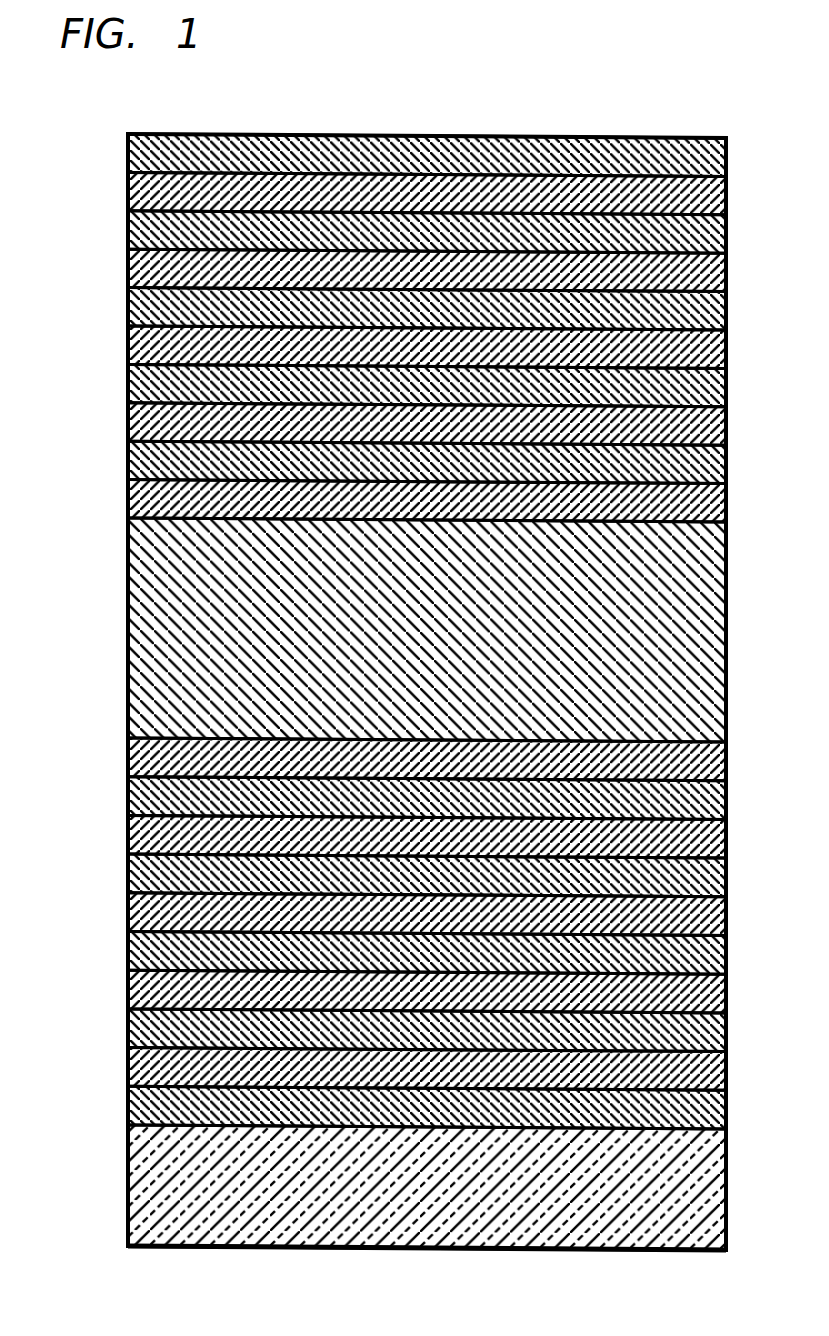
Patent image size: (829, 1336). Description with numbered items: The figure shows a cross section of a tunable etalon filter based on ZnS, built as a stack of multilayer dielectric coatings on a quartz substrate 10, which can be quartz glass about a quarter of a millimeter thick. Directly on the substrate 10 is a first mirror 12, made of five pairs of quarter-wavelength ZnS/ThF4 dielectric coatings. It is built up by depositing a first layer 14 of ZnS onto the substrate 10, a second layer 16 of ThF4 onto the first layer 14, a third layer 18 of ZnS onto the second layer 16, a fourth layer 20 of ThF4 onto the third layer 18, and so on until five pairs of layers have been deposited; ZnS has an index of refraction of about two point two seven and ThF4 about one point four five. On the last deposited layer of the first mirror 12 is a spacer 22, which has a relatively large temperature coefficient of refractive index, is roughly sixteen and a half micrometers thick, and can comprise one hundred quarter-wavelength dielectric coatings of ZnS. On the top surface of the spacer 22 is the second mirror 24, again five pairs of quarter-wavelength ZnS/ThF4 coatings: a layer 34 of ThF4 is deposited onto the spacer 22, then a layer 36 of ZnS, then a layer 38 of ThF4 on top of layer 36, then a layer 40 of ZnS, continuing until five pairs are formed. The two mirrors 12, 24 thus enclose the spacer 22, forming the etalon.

The substrate 10 is at (127, 1185).
The first mirror 12 is at (120, 738).
The first layer 14 is at (727, 1103).
The second layer 16 is at (727, 1056).
The third layer 18 is at (727, 1018).
The fourth layer 20 is at (727, 978).
The spacer 22 is at (128, 620).
The second mirror 24 is at (120, 135).
The layer 34 is at (727, 504).
The layer 36 is at (727, 458).
The layer 38 is at (727, 416).
The layer 40 is at (727, 376).